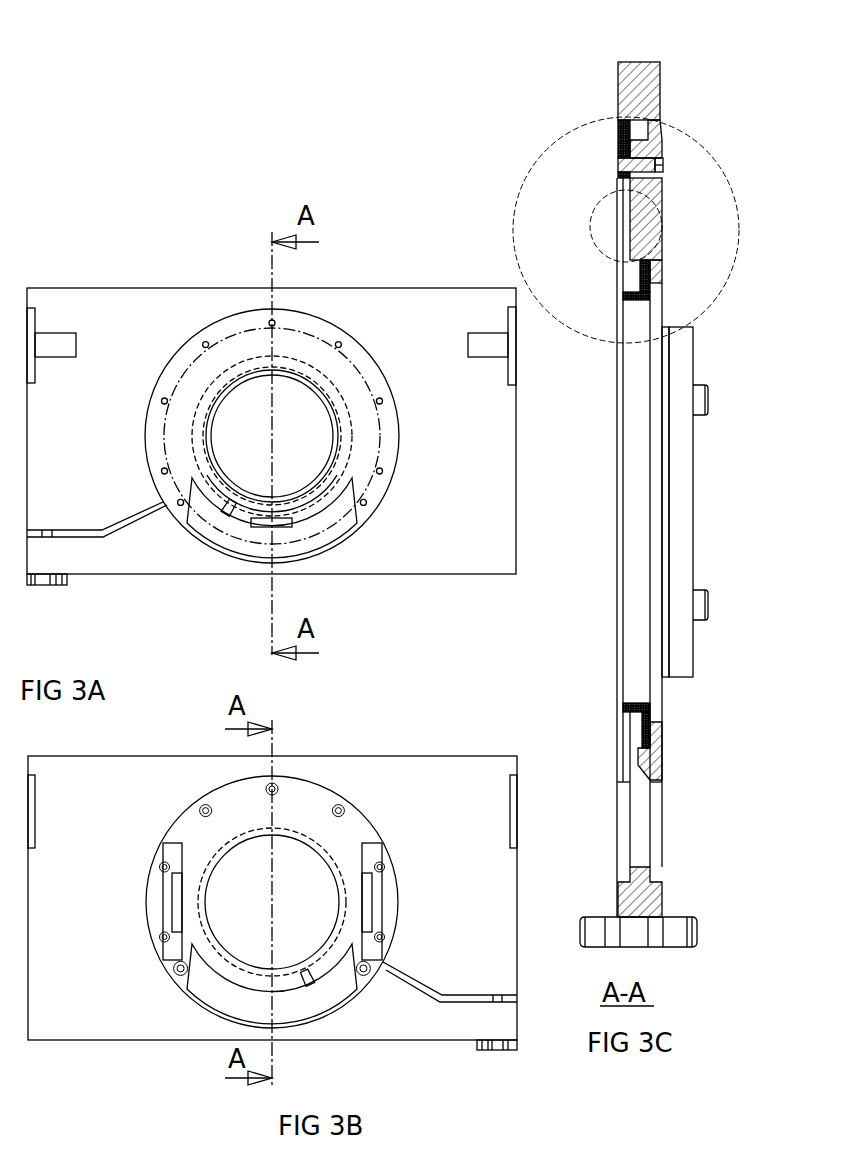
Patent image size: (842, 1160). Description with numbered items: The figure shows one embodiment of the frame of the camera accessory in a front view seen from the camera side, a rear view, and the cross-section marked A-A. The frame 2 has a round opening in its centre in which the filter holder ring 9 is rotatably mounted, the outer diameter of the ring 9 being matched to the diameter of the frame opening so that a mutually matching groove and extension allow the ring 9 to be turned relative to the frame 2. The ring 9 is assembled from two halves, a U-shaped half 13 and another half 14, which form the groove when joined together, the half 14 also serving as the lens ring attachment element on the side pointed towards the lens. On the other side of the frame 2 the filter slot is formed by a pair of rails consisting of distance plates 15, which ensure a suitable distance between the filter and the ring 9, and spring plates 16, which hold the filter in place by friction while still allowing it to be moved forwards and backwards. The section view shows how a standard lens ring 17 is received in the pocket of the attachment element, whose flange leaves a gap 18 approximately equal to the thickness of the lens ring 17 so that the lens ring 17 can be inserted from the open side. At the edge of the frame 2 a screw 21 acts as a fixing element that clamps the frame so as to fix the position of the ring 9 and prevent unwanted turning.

In FIG. 3A, the frame 2 is at (82, 303).
In FIG. 3B, the frame 2 is at (100, 1000).
In FIG. 3C, the frame 2 is at (636, 103).
In FIG. 3A, the filter holder ring 9 is at (208, 368).
In FIG. 3B, the filter holder ring 9 is at (215, 958).
In FIG. 3A, the U-shaped half 13 is at (182, 367).
In FIG. 3C, the U-shaped half 13 is at (624, 143).
In FIG. 3C, the lens ring attachment element 14 is at (638, 219).
In FIG. 3C, the distance plates 15 is at (666, 600).
In FIG. 3B, the spring plates 16 is at (175, 948).
In FIG. 3C, the spring plates 16 is at (680, 637).
In FIG. 3A, the lens ring 17 is at (247, 367).
In FIG. 3B, the lens ring 17 is at (243, 965).
In FIG. 3C, the lens ring 17 is at (633, 293).
In FIG. 3C, the gap 18 is at (643, 253).
In FIG. 3A, the screw 21 is at (47, 578).
In FIG. 3B, the screw 21 is at (497, 1046).
In FIG. 3C, the screw 21 is at (674, 932).